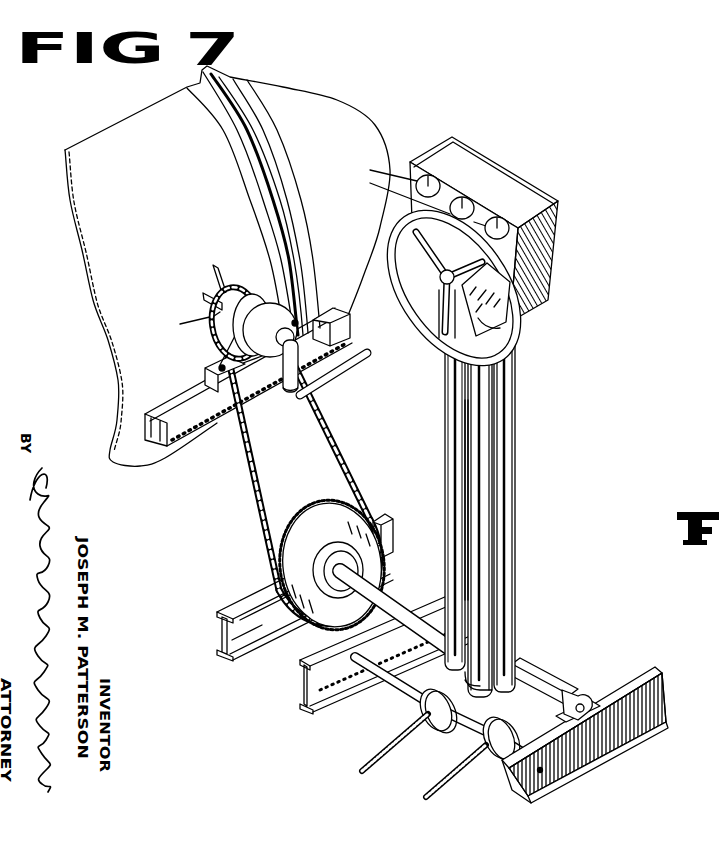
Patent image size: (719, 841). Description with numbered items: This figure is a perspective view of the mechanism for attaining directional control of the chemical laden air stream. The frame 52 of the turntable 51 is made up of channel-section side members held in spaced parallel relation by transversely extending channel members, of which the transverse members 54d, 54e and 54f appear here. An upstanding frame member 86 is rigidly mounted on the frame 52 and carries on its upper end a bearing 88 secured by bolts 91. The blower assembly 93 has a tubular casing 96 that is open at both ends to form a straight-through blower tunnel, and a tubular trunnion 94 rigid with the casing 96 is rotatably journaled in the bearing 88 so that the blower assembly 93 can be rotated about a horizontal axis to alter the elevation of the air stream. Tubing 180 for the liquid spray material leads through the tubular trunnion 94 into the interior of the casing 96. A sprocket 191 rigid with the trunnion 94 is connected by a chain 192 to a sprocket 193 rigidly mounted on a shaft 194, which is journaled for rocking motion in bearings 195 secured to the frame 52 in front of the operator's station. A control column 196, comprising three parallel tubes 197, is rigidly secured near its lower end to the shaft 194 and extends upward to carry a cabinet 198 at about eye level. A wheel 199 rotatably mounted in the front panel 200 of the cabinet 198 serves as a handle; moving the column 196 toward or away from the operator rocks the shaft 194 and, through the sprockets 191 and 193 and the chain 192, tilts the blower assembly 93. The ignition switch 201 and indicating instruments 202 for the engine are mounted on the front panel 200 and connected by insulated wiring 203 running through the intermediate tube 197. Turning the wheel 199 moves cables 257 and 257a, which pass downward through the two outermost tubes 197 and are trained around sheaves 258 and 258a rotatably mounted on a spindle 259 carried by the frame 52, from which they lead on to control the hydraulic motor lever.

The turntable 51 is at (209, 607).
The frame 52 is at (220, 633).
The transverse channel member 54d is at (262, 597).
The transverse channel member 54e is at (308, 683).
The transverse channel member 54f is at (650, 694).
The upstanding frame member 86 is at (198, 402).
The bearing 88 is at (240, 335).
The bolts 91 is at (299, 321).
The blower assembly 93 is at (352, 100).
The tubular trunnion 94 is at (259, 344).
The casing 96 is at (115, 245).
The tubing 180 is at (330, 374).
The sprocket 191 is at (258, 292).
The chain 192 is at (238, 440).
The sprocket 193 is at (364, 521).
The shaft 194 is at (546, 685).
The bearings 195 is at (582, 717).
The control column 196 is at (523, 436).
The tubes 197 is at (463, 506).
The cabinet 198 is at (444, 229).
The wheel 199 is at (492, 352).
The front panel 200 is at (478, 322).
The ignition switch 201 is at (466, 250).
The indicating instruments 202 is at (370, 176).
The insulated wiring 203 is at (462, 694).
The cable 257 is at (378, 758).
The cable 257a is at (460, 786).
The sheave 258 is at (423, 721).
The sheave 258a is at (486, 743).
The spindle 259 is at (408, 614).